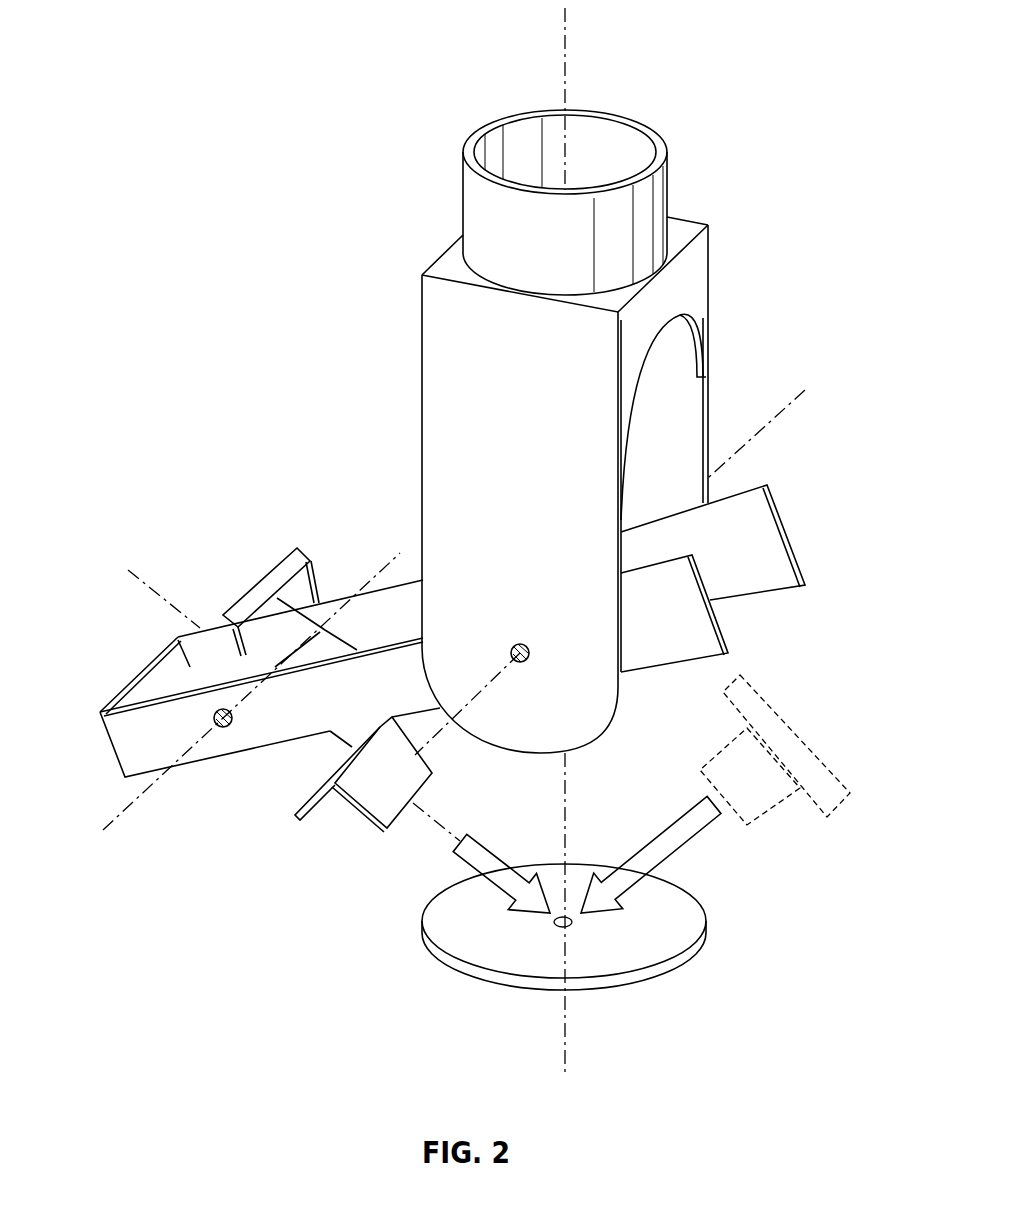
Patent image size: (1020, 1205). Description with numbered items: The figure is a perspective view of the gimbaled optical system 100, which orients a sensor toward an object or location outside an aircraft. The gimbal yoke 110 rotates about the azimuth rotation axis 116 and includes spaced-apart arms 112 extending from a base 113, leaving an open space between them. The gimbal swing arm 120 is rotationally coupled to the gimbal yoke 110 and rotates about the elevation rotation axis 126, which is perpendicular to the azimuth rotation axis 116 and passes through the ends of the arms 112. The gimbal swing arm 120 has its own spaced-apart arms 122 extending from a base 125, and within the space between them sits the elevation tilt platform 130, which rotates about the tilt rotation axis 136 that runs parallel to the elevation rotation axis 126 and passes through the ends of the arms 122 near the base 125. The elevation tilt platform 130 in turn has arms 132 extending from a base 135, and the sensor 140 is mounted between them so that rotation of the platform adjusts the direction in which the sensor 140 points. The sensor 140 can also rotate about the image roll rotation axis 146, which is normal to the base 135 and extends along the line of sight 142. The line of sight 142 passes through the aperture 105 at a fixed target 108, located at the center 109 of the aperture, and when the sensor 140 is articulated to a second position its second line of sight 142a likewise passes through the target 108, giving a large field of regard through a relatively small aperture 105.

The system 100 is at (215, 68).
The azimuth rotation axis 116 is at (567, 60).
The base 113 is at (710, 262).
The gimbal yoke 110 is at (695, 307).
The arms 112 is at (711, 438).
The elevation rotation axis 126 is at (762, 430).
The arms 122 is at (787, 533).
The gimbal swing arm 120 is at (728, 645).
The base 125 is at (118, 703).
The elevation tilt platform 130 is at (262, 583).
The base 135 is at (290, 567).
The arms 132 is at (313, 582).
The tilt rotation axis 136 is at (372, 578).
The image roll rotation axis 146 is at (160, 598).
The sensor 140 is at (360, 810).
The line of sight 142 is at (460, 868).
The second line of sight 142a is at (683, 852).
The aperture 105 is at (707, 925).
The target 108 is at (575, 925).
The center 109 is at (545, 935).